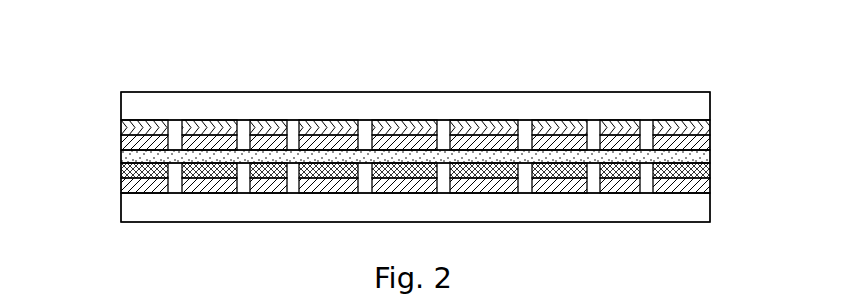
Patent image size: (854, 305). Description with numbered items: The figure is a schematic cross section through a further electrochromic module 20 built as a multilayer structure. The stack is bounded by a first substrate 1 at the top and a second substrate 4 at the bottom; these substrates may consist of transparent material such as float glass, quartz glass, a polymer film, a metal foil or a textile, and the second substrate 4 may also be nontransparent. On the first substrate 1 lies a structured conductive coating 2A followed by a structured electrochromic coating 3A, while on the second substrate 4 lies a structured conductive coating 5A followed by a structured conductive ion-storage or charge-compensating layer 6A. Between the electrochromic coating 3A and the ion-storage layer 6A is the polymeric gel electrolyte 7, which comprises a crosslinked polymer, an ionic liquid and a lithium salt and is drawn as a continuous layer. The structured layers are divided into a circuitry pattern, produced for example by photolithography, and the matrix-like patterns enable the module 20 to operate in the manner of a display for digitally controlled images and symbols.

The electrochromic module 20 is at (428, 61).
The first substrate 1 is at (121, 105).
The structured conductive coating 2A is at (121, 126).
The structured electrochromic coating 3A is at (121, 140).
The polymeric gel electrolyte 7 is at (267, 158).
The structured conductive ion-storage or charge-compensating layer 6A is at (121, 172).
The structured conductive coating 5A is at (121, 186).
The second substrate 4 is at (121, 212).